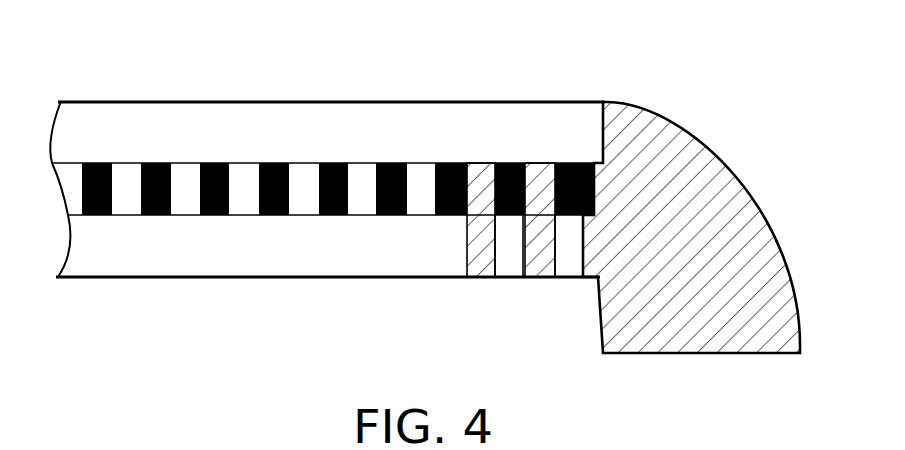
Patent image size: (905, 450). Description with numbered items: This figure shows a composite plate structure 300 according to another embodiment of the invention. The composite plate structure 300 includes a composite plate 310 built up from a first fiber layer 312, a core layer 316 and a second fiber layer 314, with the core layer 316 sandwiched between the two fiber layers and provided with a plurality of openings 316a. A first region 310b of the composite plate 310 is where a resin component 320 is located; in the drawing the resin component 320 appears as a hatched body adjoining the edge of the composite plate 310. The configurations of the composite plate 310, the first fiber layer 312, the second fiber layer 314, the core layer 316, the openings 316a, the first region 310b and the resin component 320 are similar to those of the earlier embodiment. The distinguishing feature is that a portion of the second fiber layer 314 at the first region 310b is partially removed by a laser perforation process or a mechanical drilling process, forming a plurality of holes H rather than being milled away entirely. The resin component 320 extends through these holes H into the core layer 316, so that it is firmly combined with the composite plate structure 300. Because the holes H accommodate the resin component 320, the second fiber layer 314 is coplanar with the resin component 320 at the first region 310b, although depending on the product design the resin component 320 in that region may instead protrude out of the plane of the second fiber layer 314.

The composite plate structure 300 is at (438, 202).
The composite plate 310 is at (327, 168).
The first fiber layer 312 is at (245, 125).
The second fiber layer 314 is at (362, 243).
The core layer 316 is at (323, 129).
The openings 316a is at (127, 186).
The first region 310b is at (598, 281).
The holes H is at (486, 251).
The resin component 320 is at (710, 180).